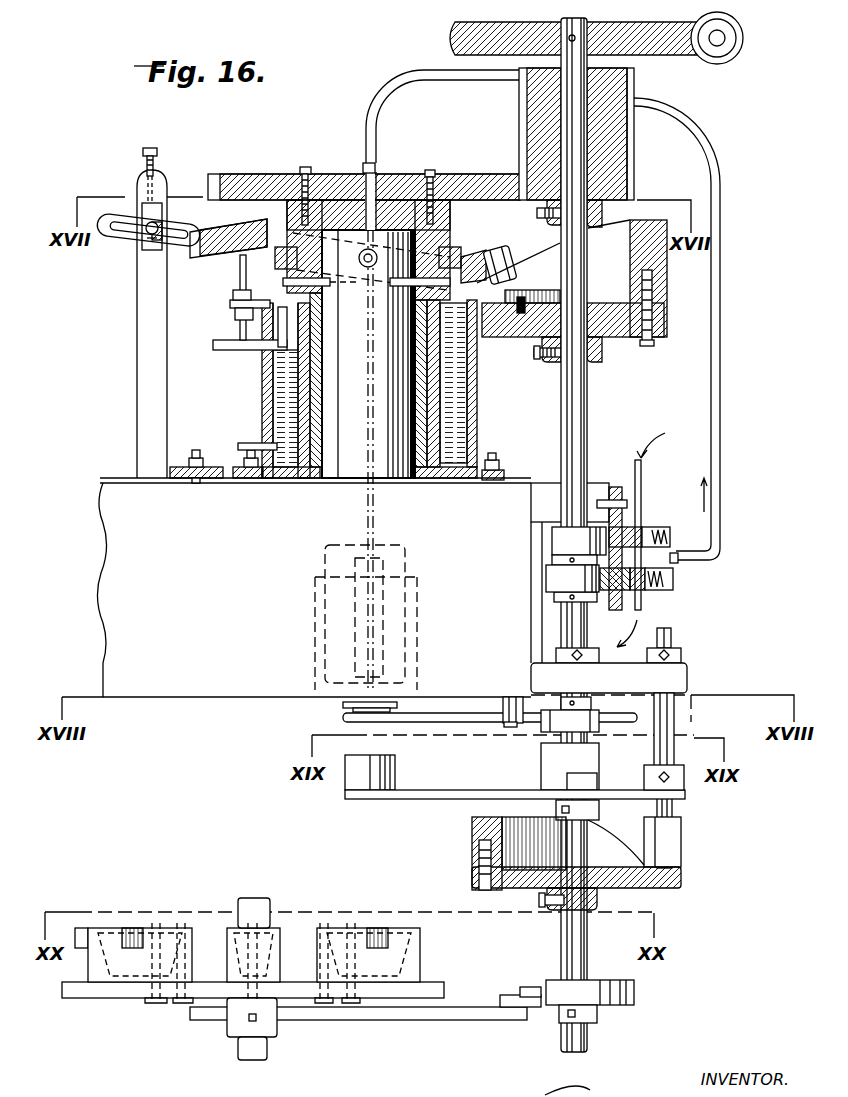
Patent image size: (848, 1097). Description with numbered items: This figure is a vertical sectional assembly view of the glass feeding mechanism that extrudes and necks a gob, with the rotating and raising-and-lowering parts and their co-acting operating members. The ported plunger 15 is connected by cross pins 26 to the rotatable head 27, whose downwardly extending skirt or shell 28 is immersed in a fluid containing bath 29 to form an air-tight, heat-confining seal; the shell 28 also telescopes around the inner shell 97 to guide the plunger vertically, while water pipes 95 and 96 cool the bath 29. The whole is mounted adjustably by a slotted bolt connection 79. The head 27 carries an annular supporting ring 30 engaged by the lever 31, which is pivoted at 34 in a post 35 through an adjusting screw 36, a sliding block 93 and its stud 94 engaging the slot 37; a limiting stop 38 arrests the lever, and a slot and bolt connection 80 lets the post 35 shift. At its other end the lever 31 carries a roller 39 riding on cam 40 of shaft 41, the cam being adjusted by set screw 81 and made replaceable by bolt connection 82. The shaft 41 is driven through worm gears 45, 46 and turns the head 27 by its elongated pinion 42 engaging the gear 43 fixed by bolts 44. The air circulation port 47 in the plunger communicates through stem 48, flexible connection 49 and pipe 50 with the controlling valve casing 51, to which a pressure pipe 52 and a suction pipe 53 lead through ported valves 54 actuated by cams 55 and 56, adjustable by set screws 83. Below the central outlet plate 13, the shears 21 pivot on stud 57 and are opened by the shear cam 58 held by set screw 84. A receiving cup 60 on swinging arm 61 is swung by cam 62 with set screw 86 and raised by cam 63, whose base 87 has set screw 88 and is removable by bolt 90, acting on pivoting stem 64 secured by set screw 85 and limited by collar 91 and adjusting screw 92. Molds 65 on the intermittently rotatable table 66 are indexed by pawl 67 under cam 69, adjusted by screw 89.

The central outlet plate 13 is at (345, 708).
The plunger 15 is at (371, 460).
The shears 21 is at (438, 723).
The cross pins 26 is at (290, 283).
The rotatable head 27 is at (452, 218).
The annular skirt or shell 28 is at (298, 370).
The fluid containing bath 29 is at (265, 418).
The annular supporting ring 30 is at (462, 257).
The lever 31 is at (228, 236).
The pivotal mounting 34 is at (150, 230).
The post 35 is at (137, 322).
The adjusting screw 36 is at (145, 160).
The slot 37 is at (170, 215).
The adjustable limiting stop 38 is at (238, 296).
The roller 39 is at (505, 250).
The cam 40 is at (552, 272).
The shaft 41 is at (588, 385).
The elongated pinion 42 is at (634, 163).
The gear 43 is at (285, 176).
The securing screws or bolts 44 is at (431, 176).
The worm gear 45 is at (440, 38).
The worm gear 46 is at (735, 40).
The air circulation port 47 is at (368, 507).
The stem 48 is at (372, 165).
The flexible connection 49 is at (672, 122).
The pipe 50 is at (722, 527).
The controlling valve casing 51 is at (676, 582).
The pressure pipe 52 is at (642, 500).
The suction pipe 53 is at (645, 607).
The ported valve 54 is at (672, 538).
The cam 55 is at (570, 585).
The cam 56 is at (575, 540).
The stud 57 is at (512, 728).
The shear cam 58 is at (600, 728).
The receiving cup 60 is at (372, 775).
The swinging arm 61 is at (430, 800).
The cam 62 is at (570, 766).
The cam 63 is at (478, 838).
The pivoting stem 64 is at (674, 830).
The cup 65 is at (170, 935).
The intermittently rotatable table 66 is at (440, 988).
The pawl 67 is at (395, 1020).
The cam 69 is at (636, 995).
The slotted bolt connection 79 is at (500, 468).
The slot and bolt connection 80 is at (262, 446).
The set screw 81 is at (537, 356).
The bolt connection 82 is at (650, 344).
The set screws 83 is at (570, 560).
The set screw 84 is at (568, 700).
The set screw 85 is at (672, 778).
The set screw 86 is at (600, 812).
The base 87 is at (682, 880).
The set screw 88 is at (543, 905).
The screw 89 is at (570, 1017).
The bolt 90 is at (482, 892).
The collar 91 is at (672, 645).
The adjusting screw 92 is at (682, 656).
The block 93 is at (152, 240).
The stud 94 is at (150, 222).
The water pipe 95 is at (240, 470).
The water pipe 96 is at (225, 340).
The inner shell 97 is at (440, 412).